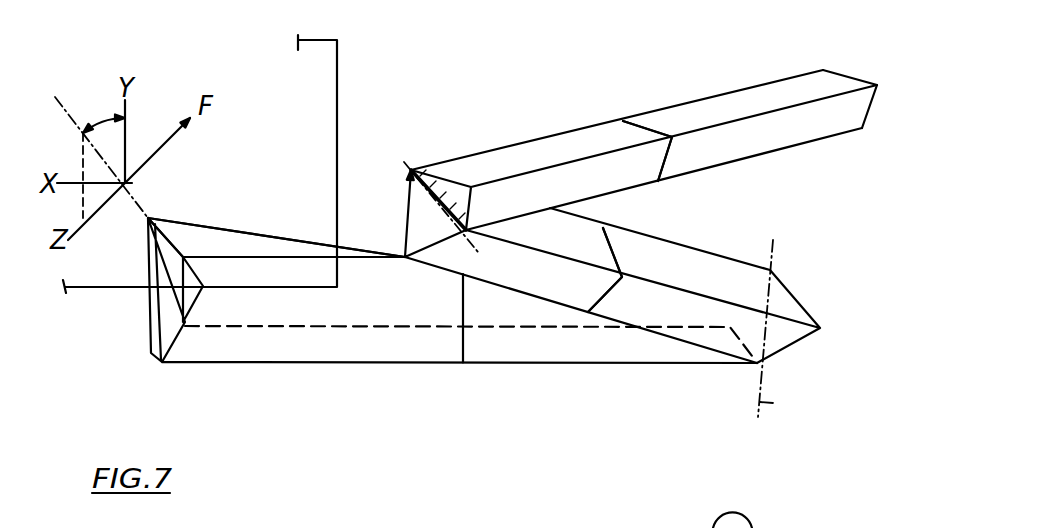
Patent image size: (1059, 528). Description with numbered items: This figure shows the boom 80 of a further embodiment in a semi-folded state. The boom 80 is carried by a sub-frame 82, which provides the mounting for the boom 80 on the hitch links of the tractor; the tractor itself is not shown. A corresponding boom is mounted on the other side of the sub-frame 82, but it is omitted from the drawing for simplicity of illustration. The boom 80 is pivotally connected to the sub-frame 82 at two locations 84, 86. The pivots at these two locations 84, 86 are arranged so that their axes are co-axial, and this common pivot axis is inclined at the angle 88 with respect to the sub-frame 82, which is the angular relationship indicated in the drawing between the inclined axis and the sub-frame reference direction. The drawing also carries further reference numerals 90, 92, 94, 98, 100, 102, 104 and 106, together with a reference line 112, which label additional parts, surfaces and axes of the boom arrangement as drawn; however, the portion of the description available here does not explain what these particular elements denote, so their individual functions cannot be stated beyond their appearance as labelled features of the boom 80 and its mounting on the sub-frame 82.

The boom 80 is at (823, 66).
The sub-frame 82 is at (345, 92).
The pivot location 84 is at (168, 237).
The pivot location 86 is at (183, 257).
The angle 88 is at (97, 117).
The base body 90 is at (526, 366).
The second cutting blade 92 is at (692, 243).
The blade end 94 is at (849, 140).
The cutting edge 98 is at (447, 208).
The reference plane line 100 is at (773, 403).
The cutting edge axis 102 is at (410, 166).
The side surface 104 is at (612, 148).
The side surface 106 is at (772, 153).
The inclined reference line 112 is at (101, 135).